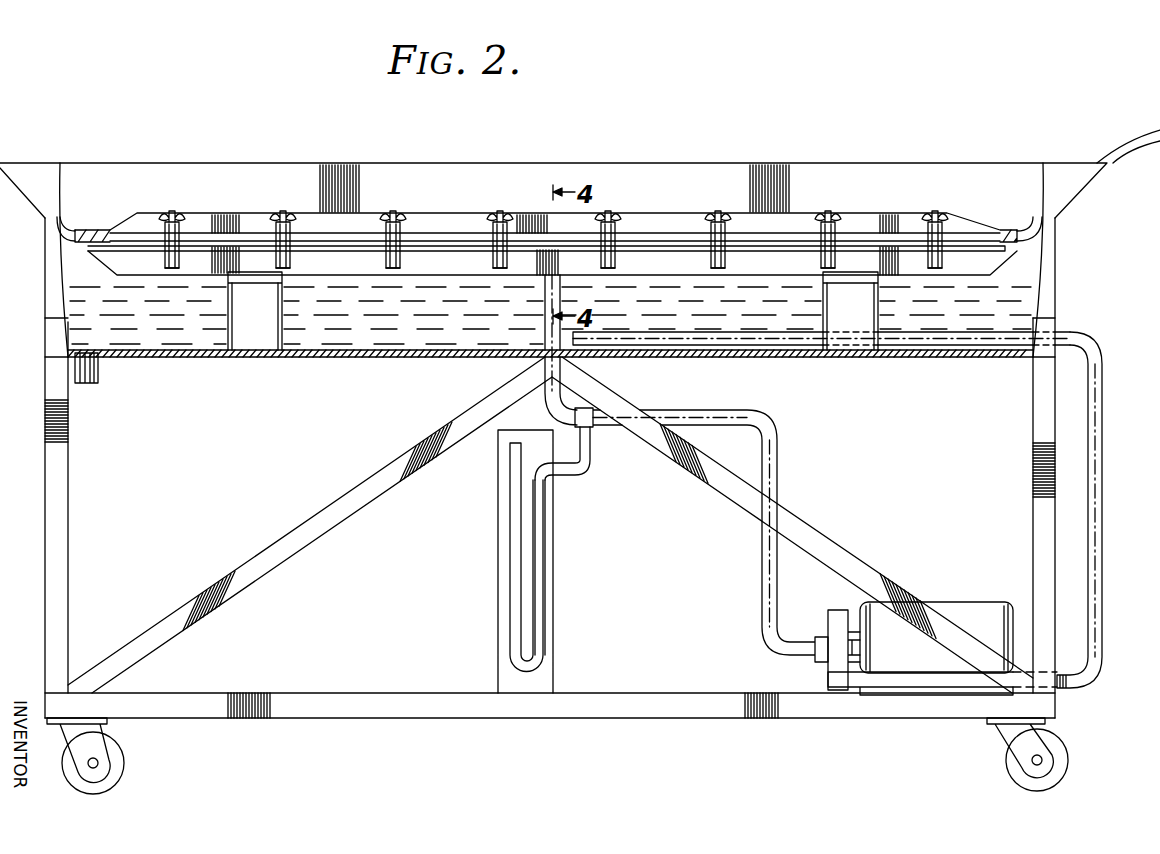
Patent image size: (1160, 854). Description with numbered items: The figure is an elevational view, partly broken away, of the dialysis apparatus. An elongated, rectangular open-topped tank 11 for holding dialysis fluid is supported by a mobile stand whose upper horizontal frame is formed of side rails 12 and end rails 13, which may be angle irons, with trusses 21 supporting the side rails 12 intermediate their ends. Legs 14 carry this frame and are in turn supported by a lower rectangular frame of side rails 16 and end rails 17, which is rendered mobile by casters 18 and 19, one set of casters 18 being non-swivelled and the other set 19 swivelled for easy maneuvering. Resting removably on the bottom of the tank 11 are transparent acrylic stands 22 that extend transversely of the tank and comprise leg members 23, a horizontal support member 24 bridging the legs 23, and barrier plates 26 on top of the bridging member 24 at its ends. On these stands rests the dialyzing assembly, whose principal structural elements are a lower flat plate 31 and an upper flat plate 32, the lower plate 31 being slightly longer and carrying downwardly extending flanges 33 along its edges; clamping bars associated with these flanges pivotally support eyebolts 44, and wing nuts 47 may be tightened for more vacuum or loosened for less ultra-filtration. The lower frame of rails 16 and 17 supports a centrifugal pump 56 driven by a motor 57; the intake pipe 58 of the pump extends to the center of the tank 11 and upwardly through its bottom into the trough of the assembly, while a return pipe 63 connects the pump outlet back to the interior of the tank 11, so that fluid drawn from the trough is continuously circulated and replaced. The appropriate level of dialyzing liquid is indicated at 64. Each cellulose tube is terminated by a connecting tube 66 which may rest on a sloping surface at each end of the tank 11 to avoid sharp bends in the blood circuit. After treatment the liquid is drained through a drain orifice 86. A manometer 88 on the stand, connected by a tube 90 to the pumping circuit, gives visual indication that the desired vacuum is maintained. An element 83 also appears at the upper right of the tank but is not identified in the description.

The tank 11 is at (310, 360).
The side rails 12 is at (53, 347).
The end rails 13 is at (45, 331).
The legs 14 is at (45, 463).
The side rails 16 is at (192, 715).
The end rails 17 is at (45, 701).
The casters 18 is at (1010, 742).
The casters 19 is at (70, 741).
The trusses 21 is at (300, 525).
The stands 22 is at (228, 346).
The leg members 23 is at (282, 337).
The horizontal support member 24 is at (240, 283).
The barrier plates 26 is at (286, 269).
The lower flat plate 31 is at (1000, 252).
The upper flat plate 32 is at (978, 238).
The downwardly extending flanges 33 is at (370, 275).
The eyebolt 44 is at (283, 217).
The wing nuts 47 is at (292, 215).
The centrifugal pump 56 is at (828, 614).
The motor 57 is at (955, 603).
The intake pipe 58 is at (688, 410).
The return pipe 63 is at (1102, 481).
The level of dialyzing liquid 64 is at (100, 230).
The tube 66 is at (68, 230).
The handle 83 is at (1136, 146).
The drain orifice 86 is at (100, 383).
The manometer 88 is at (541, 574).
The tube 90 is at (577, 478).